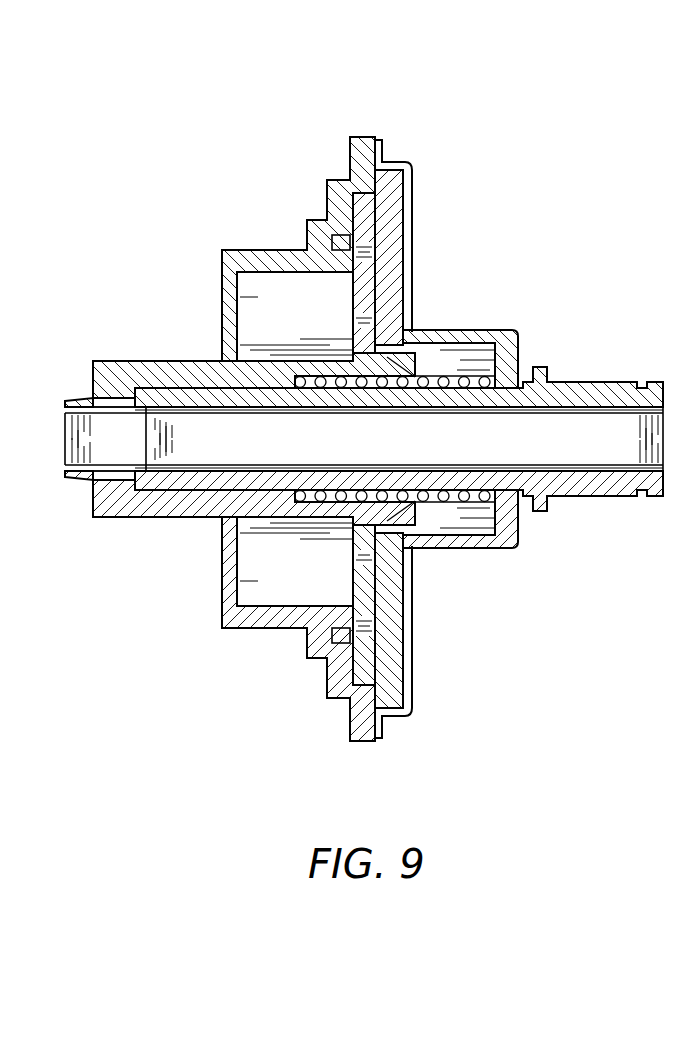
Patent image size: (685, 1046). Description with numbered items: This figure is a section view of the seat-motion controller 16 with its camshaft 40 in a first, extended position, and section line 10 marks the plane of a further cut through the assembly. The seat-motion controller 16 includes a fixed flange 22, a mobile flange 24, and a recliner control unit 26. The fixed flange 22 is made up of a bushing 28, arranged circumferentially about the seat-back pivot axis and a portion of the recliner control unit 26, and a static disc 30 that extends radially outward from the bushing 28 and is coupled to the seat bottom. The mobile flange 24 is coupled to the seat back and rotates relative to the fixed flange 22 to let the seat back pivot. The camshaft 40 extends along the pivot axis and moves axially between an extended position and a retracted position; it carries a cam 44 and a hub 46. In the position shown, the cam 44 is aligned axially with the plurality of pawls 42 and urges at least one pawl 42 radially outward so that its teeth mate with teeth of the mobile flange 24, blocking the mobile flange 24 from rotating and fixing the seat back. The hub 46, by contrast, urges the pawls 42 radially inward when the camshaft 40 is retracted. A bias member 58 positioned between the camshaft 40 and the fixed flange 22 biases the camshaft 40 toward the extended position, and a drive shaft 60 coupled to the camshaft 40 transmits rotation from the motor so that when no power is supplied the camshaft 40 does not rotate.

The section line 10 is at (392, 113).
The seat-motion controller 16 is at (182, 85).
The fixed flange 22 is at (424, 199).
The mobile flange 24 is at (325, 213).
The recliner control unit 26 is at (321, 318).
The bushing 28 is at (497, 322).
The static disc 30 is at (416, 663).
The camshaft 40 is at (147, 360).
The pawls 42 is at (398, 227).
The cam 44 is at (345, 540).
The hub 46 is at (292, 520).
The bias member 58 is at (450, 505).
The drive shaft 60 is at (572, 502).